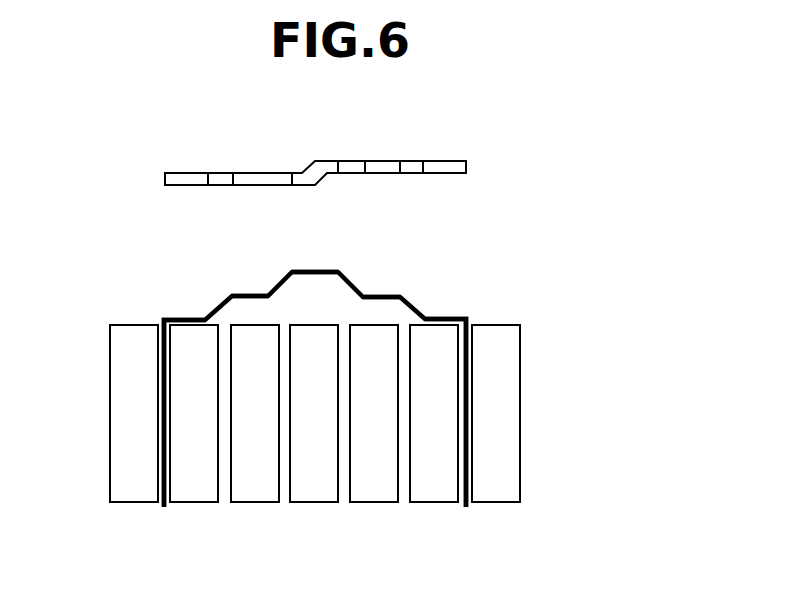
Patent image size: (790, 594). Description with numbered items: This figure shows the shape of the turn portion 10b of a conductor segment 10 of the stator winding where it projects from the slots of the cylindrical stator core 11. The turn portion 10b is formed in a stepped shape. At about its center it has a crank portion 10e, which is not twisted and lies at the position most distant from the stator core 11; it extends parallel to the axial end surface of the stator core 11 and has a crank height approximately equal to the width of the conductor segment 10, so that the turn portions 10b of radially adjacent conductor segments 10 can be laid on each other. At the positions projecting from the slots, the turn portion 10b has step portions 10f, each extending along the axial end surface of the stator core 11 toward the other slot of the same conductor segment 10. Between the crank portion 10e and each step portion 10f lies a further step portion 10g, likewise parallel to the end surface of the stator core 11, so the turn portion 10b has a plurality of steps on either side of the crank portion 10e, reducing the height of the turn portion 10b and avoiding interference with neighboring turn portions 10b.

The conductor segment 10 is at (361, 300).
The turn portion 10b is at (305, 167).
The crank portion 10e is at (312, 270).
The step portion 10g is at (242, 294).
The step portion 10f is at (183, 318).
The stator core 11 is at (522, 445).